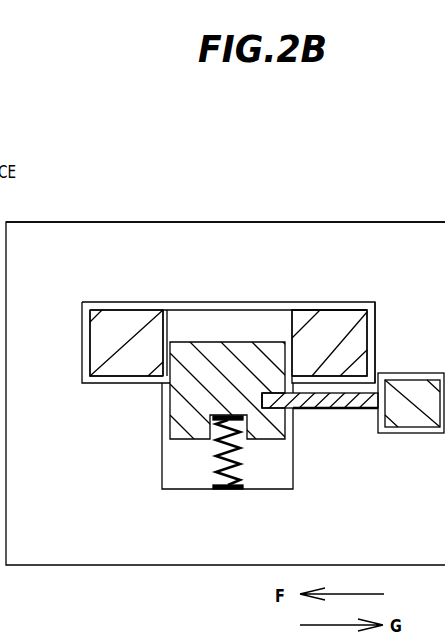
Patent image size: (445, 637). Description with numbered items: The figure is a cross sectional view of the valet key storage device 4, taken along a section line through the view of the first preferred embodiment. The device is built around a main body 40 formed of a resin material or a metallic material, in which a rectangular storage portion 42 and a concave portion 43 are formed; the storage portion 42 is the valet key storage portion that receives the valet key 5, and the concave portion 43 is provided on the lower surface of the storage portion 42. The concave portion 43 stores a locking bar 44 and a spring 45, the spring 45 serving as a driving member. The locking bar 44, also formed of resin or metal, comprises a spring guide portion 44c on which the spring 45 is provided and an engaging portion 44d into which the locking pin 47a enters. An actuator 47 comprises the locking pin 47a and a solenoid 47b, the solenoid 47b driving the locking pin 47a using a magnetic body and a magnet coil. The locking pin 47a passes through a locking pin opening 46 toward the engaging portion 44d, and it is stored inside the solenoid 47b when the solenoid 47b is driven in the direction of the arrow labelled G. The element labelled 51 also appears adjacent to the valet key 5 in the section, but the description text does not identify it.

The valet key storage device 4 is at (388, 198).
The main body 40 is at (48, 235).
The storage portion 42 is at (100, 301).
The valet key 5 is at (142, 318).
The partition wall 51 is at (167, 317).
The concave portion 43 is at (294, 482).
The locking bar 44 is at (185, 400).
The spring guide portion 44c is at (205, 433).
The engaging portion 44d is at (268, 400).
The spring 45 is at (215, 483).
The locking pin opening 46 is at (350, 398).
The actuator 47 is at (232, 523).
The locking pin 47a is at (365, 409).
The solenoid 47b is at (387, 433).